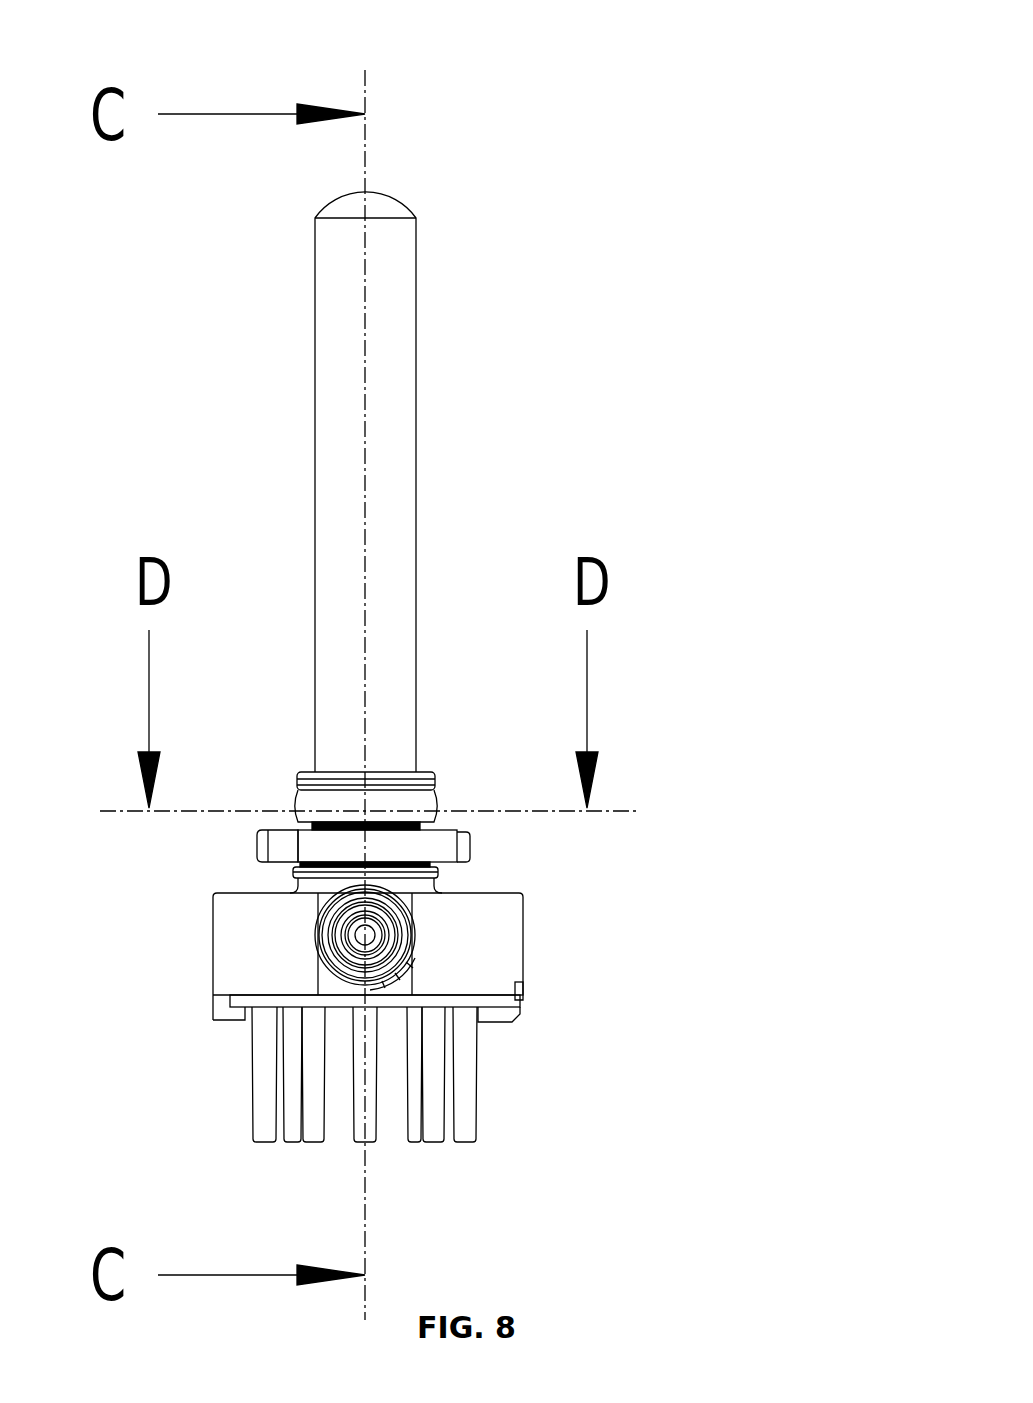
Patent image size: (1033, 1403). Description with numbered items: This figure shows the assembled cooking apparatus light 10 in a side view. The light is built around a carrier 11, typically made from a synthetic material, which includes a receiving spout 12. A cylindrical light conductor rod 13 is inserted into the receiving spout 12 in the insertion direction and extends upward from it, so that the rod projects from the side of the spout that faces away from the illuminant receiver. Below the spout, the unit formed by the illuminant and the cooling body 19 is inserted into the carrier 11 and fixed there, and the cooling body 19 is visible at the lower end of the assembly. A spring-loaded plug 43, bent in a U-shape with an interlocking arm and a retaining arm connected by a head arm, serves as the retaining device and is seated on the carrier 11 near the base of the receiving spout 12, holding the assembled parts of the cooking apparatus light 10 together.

The cooking apparatus light 10 is at (532, 157).
The light conductor rod 13 is at (452, 405).
The receiving spout 12 is at (463, 798).
The spring-loaded plug 43 is at (483, 846).
The carrier 11 is at (540, 920).
The cooling body 19 is at (488, 1114).